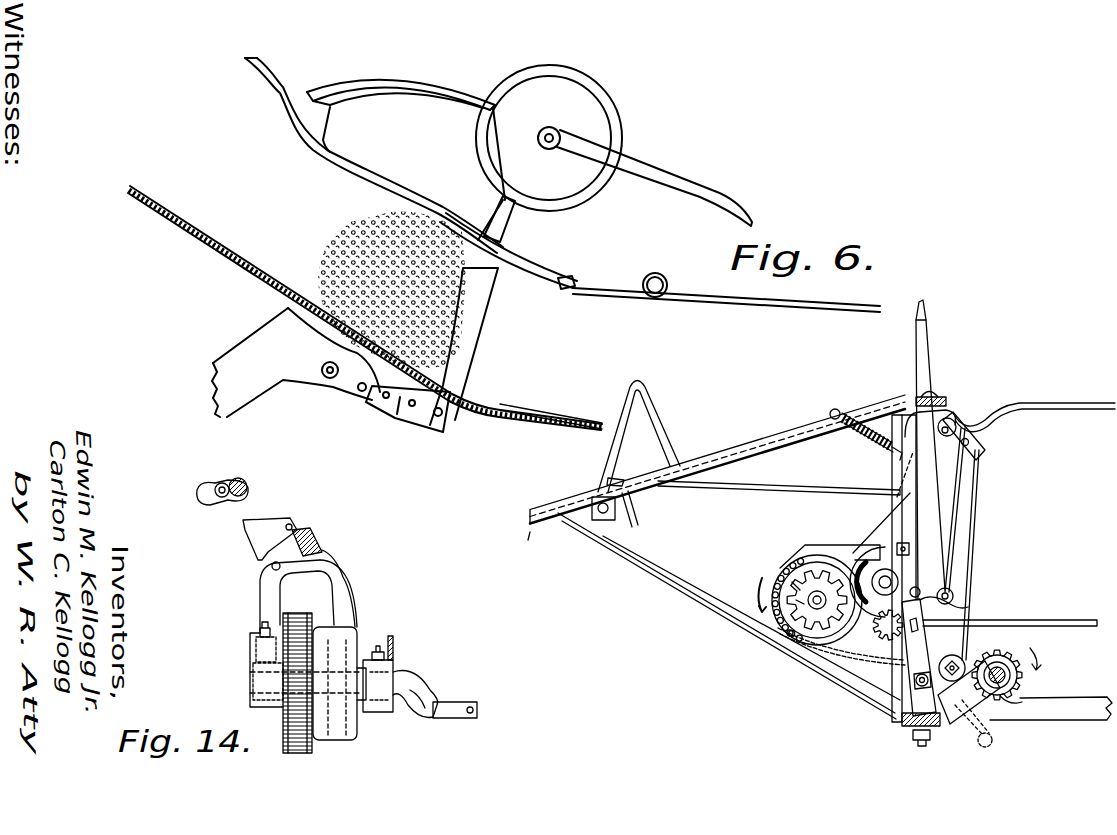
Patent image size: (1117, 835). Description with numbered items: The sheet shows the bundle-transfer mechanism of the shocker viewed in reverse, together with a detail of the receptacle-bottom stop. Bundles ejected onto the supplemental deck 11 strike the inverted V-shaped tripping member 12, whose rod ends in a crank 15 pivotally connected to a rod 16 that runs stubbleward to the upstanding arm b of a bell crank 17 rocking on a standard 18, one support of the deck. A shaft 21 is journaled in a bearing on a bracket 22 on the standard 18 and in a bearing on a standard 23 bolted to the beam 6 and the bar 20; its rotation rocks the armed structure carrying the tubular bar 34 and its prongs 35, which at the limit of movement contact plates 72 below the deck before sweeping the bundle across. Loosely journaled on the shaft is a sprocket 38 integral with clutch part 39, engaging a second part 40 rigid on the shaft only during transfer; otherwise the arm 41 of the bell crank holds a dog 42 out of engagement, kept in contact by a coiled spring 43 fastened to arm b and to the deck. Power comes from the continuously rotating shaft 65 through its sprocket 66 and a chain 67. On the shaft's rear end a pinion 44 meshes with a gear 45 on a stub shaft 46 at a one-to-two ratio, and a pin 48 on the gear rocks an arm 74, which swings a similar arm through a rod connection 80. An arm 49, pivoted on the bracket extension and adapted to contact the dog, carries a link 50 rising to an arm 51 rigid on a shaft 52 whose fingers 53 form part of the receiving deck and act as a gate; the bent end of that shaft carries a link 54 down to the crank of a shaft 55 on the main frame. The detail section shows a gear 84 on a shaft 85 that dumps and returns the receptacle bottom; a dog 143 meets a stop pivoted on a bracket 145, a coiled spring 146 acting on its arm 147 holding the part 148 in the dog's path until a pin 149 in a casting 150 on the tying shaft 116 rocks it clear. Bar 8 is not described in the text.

In FIG. 6, the beam 6 is at (902, 733).
In FIG. 6, the drive bar 8 is at (1073, 717).
In FIG. 6, the supplemental deck 11 is at (742, 455).
In FIG. 6, the tripping member 12 is at (647, 393).
In FIG. 6, the crank 15 is at (578, 488).
In FIG. 6, the rod 16 is at (782, 491).
In FIG. 6, the bell crank 17 is at (876, 536).
In FIG. 6, the standard 18 is at (891, 708).
In FIG. 6, the bar 20 is at (947, 402).
In FIG. 6, the shaft 21 is at (758, 598).
In FIG. 6, the bracket 22 is at (865, 658).
In FIG. 6, the standard 23 is at (890, 677).
In FIG. 6, the tubular bar 34 is at (887, 427).
In FIG. 6, the prongs 35 is at (919, 360).
In FIG. 6, the sprocket 38 is at (787, 635).
In FIG. 6, the clutch part 39 is at (793, 585).
In FIG. 6, the clutch part 40 is at (798, 602).
In FIG. 6, the arm 41 is at (834, 552).
In FIG. 6, the dog 42 is at (805, 555).
In FIG. 6, the coiled spring 43 is at (850, 433).
In FIG. 6, the pinion 44 is at (778, 566).
In FIG. 6, the gear 45 is at (874, 582).
In FIG. 6, the stub shaft 46 is at (900, 567).
In FIG. 6, the pin 48 is at (898, 581).
In FIG. 6, the arm 49 is at (905, 548).
In FIG. 6, the link 50 is at (962, 486).
In FIG. 6, the arm 51 is at (975, 447).
In FIG. 6, the shaft 52 is at (946, 434).
In FIG. 6, the fingers 53 is at (1082, 409).
In FIG. 6, the link 54 is at (975, 528).
In FIG. 6, the shaft 55 is at (978, 746).
In FIG. 6, the shaft 65 is at (1005, 705).
In FIG. 6, the sprocket 66 is at (1012, 660).
In FIG. 6, the chain 67 is at (985, 660).
In FIG. 6, the plates 72 is at (633, 512).
In FIG. 6, the arm 74 is at (925, 656).
In FIG. 6, the rod connection 80 is at (1081, 620).
In FIG. 14, the gear 84 is at (298, 614).
In FIG. 14, the shaft 85 is at (405, 680).
In FIG. 14, the shaft 116 is at (246, 482).
In FIG. 14, the dog 143 is at (352, 611).
In FIG. 14, the bracket 145 is at (262, 603).
In FIG. 14, the coiled spring 146 is at (320, 532).
In FIG. 14, the arm 147 is at (290, 518).
In FIG. 14, the part 148 is at (347, 600).
In FIG. 14, the pin 149 is at (206, 506).
In FIG. 14, the casting 150 is at (226, 483).
In FIG. 6, the upstanding arm b is at (900, 466).